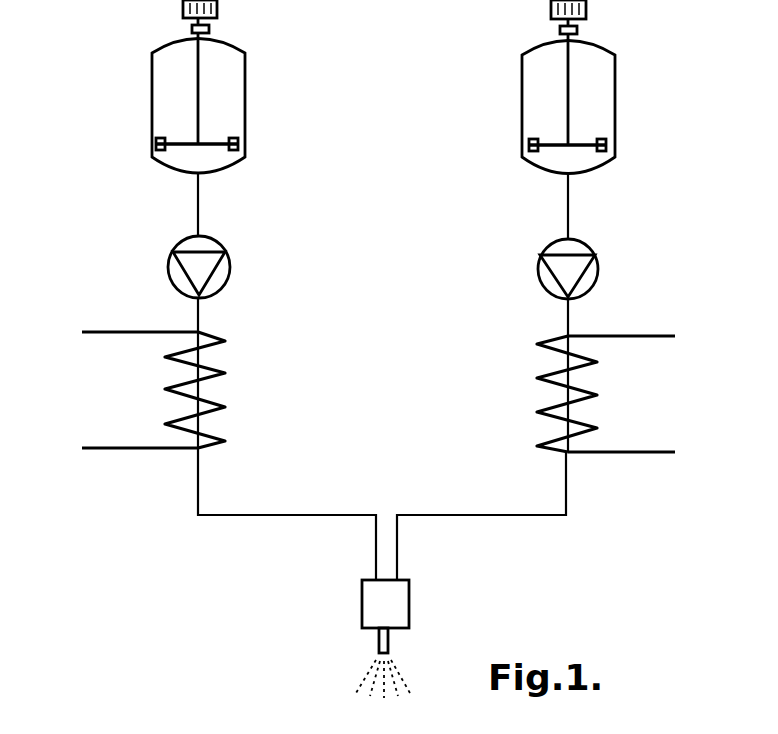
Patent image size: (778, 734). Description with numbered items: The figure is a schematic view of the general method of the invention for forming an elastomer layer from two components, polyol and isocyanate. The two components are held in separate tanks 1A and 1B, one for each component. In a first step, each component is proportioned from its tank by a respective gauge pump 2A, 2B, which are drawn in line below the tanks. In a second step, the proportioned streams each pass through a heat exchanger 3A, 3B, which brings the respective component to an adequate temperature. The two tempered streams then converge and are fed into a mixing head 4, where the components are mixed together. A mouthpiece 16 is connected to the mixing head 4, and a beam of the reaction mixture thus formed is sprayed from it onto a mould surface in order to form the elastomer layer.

The tank 1A is at (152, 114).
The tank 1B is at (615, 123).
The gauge pump 2A is at (167, 266).
The gauge pump 2B is at (600, 270).
The heat exchanger 3A is at (180, 363).
The heat exchanger 3B is at (588, 395).
The mixing head 4 is at (396, 589).
The mouthpiece 16 is at (388, 640).